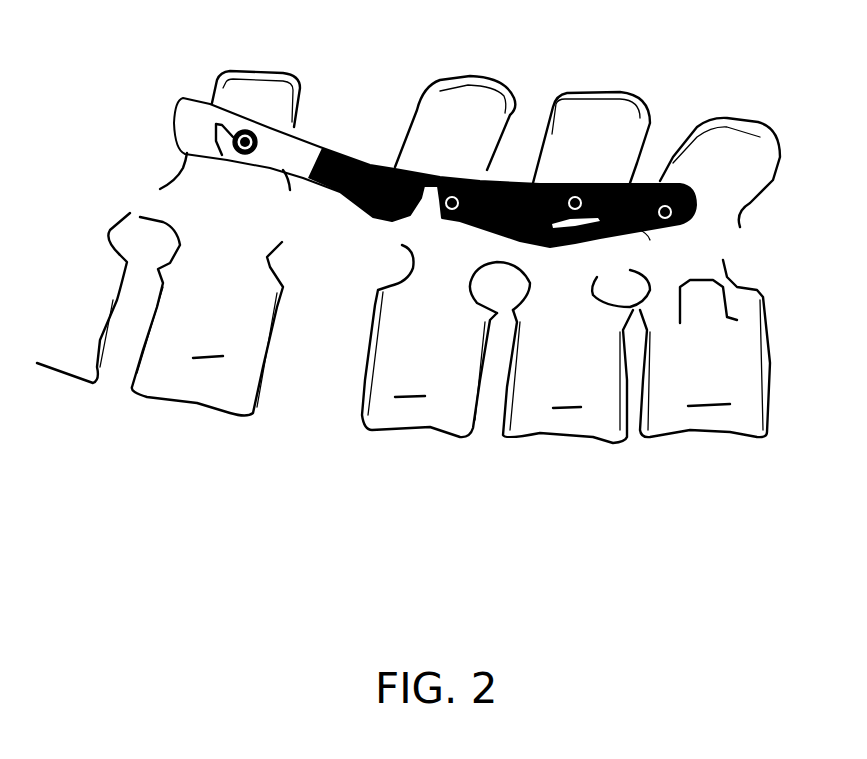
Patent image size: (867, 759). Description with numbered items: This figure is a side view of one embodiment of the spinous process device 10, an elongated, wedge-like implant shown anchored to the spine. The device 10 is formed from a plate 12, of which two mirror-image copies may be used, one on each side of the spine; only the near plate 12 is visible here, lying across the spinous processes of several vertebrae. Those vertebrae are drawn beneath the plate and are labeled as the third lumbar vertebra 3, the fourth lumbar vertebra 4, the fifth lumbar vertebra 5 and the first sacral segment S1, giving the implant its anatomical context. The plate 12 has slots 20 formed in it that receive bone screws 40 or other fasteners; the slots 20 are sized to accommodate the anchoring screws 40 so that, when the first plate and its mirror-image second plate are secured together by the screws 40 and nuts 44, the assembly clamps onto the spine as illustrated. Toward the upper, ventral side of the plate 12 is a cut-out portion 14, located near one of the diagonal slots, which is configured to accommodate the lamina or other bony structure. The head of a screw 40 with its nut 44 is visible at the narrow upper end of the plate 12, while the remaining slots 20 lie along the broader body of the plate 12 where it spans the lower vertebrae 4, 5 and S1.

The spinous process device 10 is at (435, 161).
The plate 12 is at (353, 155).
The cut-out portion 14 is at (427, 223).
The slots 20 is at (563, 240).
The bone screws 40 is at (237, 153).
The nuts 44 is at (252, 153).
The L3 vertebra 3 is at (160, 314).
The L4 vertebra 4 is at (446, 341).
The L5 vertebra 5 is at (576, 356).
The S1 sacral vertebra S1 is at (705, 348).